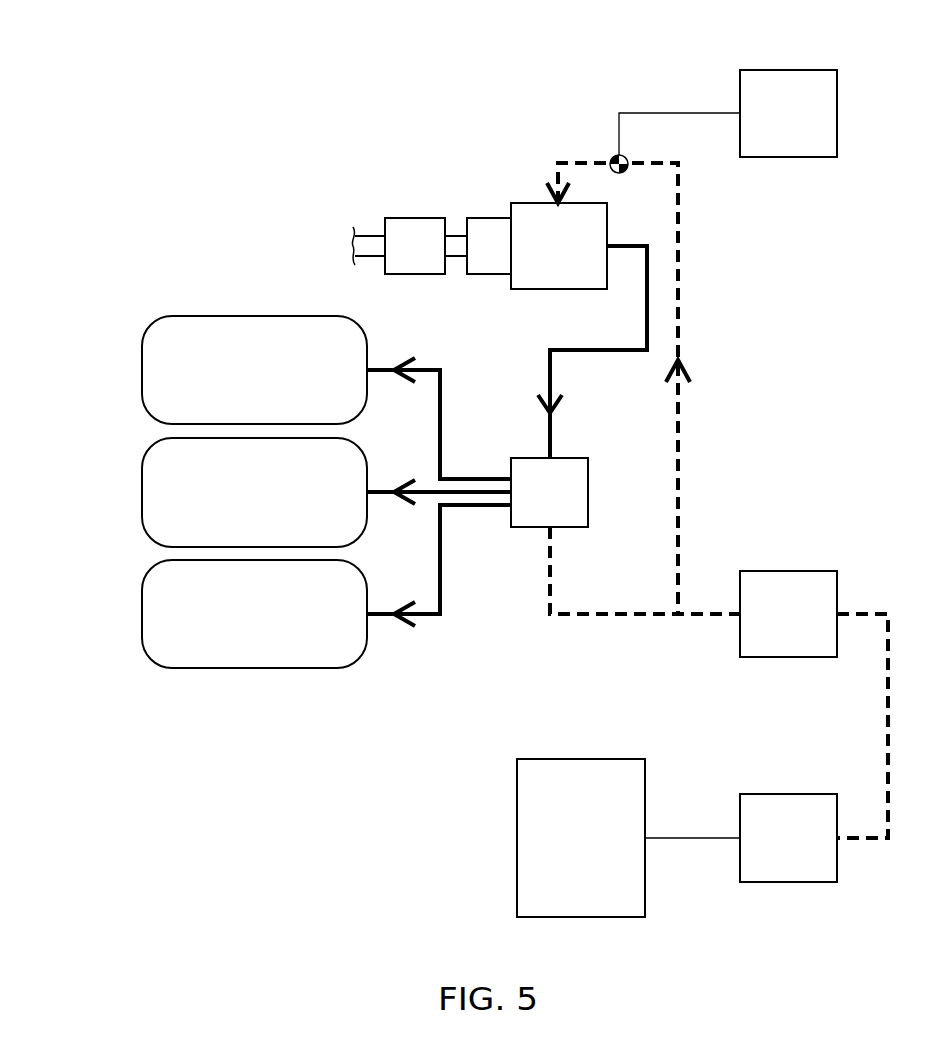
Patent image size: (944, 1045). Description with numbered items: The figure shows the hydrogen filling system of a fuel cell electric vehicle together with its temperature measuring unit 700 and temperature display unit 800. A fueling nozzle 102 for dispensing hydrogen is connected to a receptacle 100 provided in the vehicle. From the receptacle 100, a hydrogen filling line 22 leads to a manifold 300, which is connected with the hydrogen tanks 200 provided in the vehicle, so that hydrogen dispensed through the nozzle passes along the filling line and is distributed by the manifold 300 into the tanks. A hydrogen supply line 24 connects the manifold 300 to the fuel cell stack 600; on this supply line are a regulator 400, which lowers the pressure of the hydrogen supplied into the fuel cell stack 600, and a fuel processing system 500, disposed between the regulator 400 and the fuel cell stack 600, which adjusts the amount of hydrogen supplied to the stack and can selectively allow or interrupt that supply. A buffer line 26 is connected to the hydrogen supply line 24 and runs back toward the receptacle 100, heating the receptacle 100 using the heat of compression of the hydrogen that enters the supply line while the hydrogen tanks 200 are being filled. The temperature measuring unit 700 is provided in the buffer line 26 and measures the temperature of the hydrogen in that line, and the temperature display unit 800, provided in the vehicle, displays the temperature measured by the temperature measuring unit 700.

The receptacle 100 is at (537, 203).
The fueling nozzle 102 is at (413, 218).
The hydrogen tanks 200 is at (138, 370).
The manifold 300 is at (514, 458).
The regulator 400 is at (789, 571).
The fuel processing system 500 is at (789, 794).
The fuel cell stack 600 is at (582, 759).
The temperature measuring unit 700 is at (626, 156).
The temperature display unit 800 is at (790, 70).
The hydrogen filling line 22 is at (647, 297).
The hydrogen supply line 24 is at (649, 618).
The buffer line 26 is at (680, 228).